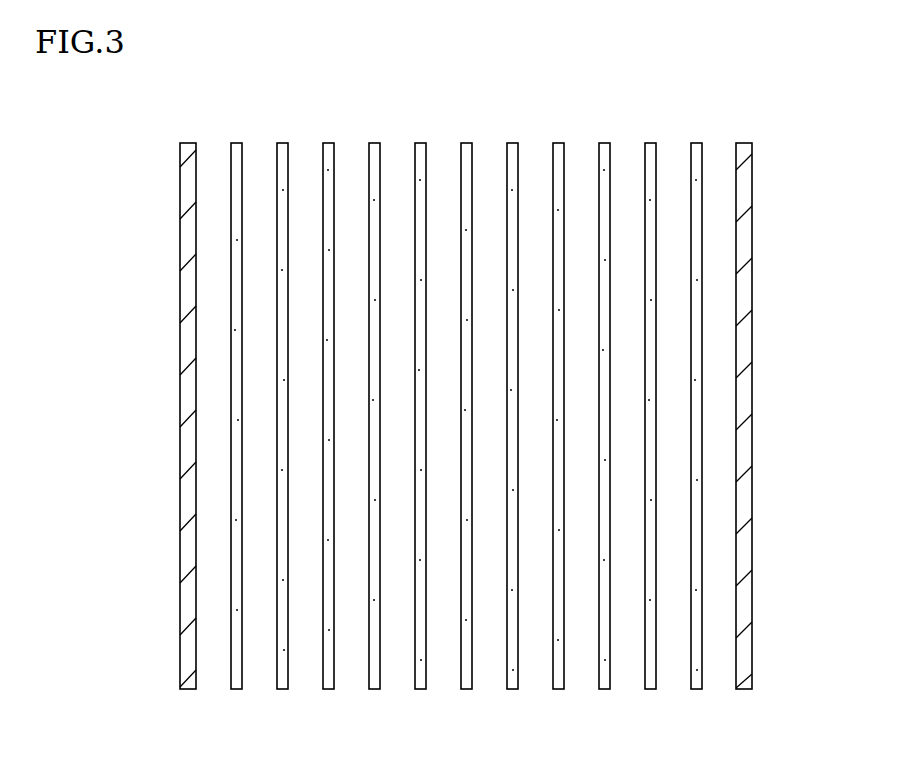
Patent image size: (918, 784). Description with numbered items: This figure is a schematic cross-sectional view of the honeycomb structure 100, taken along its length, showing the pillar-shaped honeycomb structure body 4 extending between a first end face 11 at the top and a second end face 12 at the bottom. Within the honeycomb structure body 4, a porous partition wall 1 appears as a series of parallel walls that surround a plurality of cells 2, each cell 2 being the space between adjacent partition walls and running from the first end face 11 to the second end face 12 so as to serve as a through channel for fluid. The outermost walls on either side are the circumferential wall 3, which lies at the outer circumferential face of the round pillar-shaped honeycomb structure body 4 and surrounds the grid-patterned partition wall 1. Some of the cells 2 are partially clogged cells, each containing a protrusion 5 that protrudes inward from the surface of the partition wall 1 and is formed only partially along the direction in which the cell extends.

The honeycomb structure 100 is at (836, 48).
The partition wall 1 is at (650, 170).
The cell 2 is at (574, 203).
The circumferential wall 3 is at (183, 315).
The honeycomb structure body 4 is at (759, 149).
The protrusion 5 is at (291, 326).
The first end face 11 is at (206, 126).
The second end face 12 is at (221, 703).